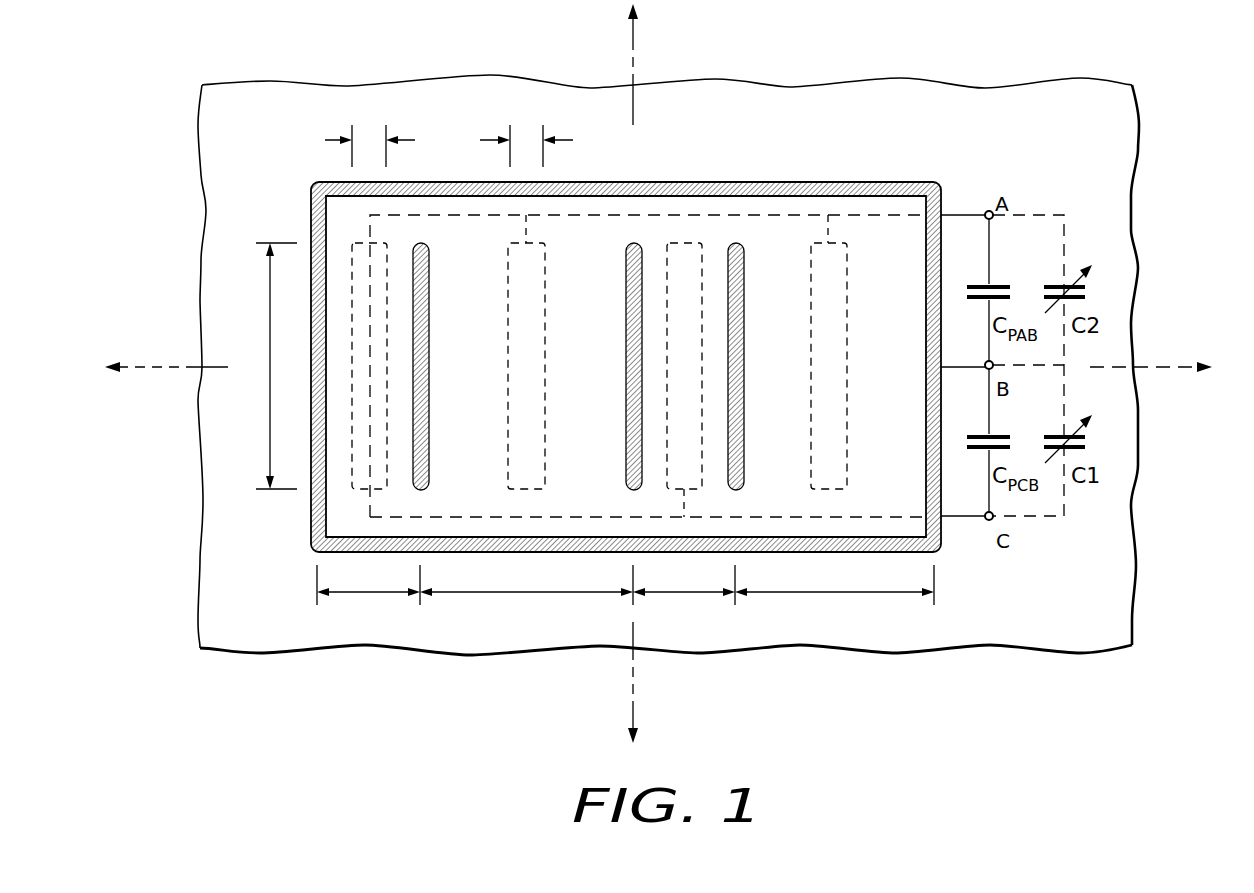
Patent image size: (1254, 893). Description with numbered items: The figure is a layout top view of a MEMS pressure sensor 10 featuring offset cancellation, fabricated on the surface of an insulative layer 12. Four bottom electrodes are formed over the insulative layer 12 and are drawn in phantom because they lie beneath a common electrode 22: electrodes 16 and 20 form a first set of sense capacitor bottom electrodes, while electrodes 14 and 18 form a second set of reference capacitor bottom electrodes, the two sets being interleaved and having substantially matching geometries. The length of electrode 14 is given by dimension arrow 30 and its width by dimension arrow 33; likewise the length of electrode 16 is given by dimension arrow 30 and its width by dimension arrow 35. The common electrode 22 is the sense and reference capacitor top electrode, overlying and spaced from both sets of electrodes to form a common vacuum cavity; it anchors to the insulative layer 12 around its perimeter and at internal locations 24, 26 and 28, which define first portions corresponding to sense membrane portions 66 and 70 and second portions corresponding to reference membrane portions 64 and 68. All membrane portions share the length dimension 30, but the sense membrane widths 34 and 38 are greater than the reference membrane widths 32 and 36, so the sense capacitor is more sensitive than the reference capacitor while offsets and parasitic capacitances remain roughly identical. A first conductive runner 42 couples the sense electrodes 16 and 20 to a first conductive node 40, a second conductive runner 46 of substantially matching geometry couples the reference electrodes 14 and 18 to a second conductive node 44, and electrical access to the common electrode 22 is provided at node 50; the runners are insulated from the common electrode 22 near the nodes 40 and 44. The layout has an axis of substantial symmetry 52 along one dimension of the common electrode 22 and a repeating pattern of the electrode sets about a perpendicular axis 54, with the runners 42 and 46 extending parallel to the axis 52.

The MEMS pressure sensor 10 is at (1182, 33).
The insulative layer 12 is at (1064, 620).
The reference capacitor bottom electrode 14 is at (355, 399).
The sense capacitor bottom electrode 16 is at (512, 399).
The reference capacitor bottom electrode 18 is at (670, 399).
The sense capacitor bottom electrode 20 is at (815, 399).
The common electrode 22 is at (876, 168).
The anchor location 24 is at (430, 332).
The anchor location 26 is at (626, 332).
The anchor location 28 is at (744, 332).
The length dimension arrow 30 is at (270, 322).
The width dimension arrow of second portion 32 is at (373, 593).
The width dimension arrow of electrode 33 is at (370, 146).
The width dimension arrow of first portion 34 is at (526, 593).
The width dimension arrow of electrode 35 is at (526, 146).
The width dimension arrow of second portion 36 is at (689, 593).
The width dimension arrow of first portion 38 is at (838, 593).
The first conductive node 40 is at (985, 219).
The first conductive runner 42 is at (586, 216).
The second conductive node 44 is at (985, 520).
The second conductive runner 46 is at (585, 516).
The node 50 is at (985, 369).
The axis of substantial symmetry 52 is at (1150, 367).
The axis 54 is at (633, 38).
The reference membrane portion 64 is at (371, 108).
The sense membrane portion 66 is at (530, 108).
The reference membrane portion 68 is at (707, 108).
The sense membrane portion 70 is at (830, 108).